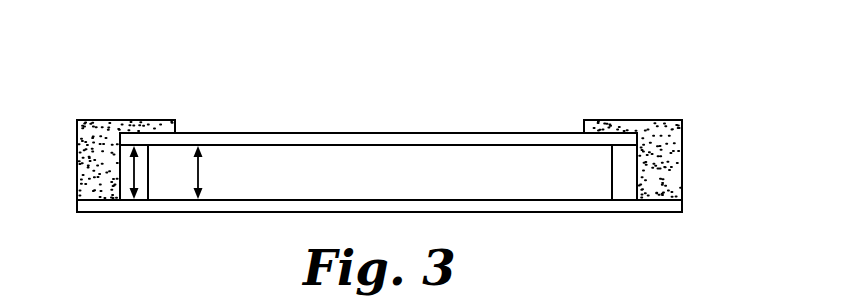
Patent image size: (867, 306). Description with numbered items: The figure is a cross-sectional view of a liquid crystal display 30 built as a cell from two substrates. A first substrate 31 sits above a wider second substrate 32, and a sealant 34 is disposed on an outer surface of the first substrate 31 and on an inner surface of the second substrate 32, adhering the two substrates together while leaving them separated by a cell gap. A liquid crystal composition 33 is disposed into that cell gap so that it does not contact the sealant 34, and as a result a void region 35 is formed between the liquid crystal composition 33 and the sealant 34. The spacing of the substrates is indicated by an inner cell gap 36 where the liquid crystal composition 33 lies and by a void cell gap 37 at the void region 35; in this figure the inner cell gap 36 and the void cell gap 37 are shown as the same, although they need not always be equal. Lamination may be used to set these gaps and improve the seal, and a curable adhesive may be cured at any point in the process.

The liquid crystal display 30 is at (599, 86).
The first substrate 31 is at (537, 137).
The second substrate 32 is at (668, 207).
The liquid crystal composition 33 is at (455, 160).
The sealant 34 is at (667, 158).
The void region 35 is at (625, 160).
The inner cell gap 36 is at (198, 174).
The void cell gap 37 is at (133, 172).